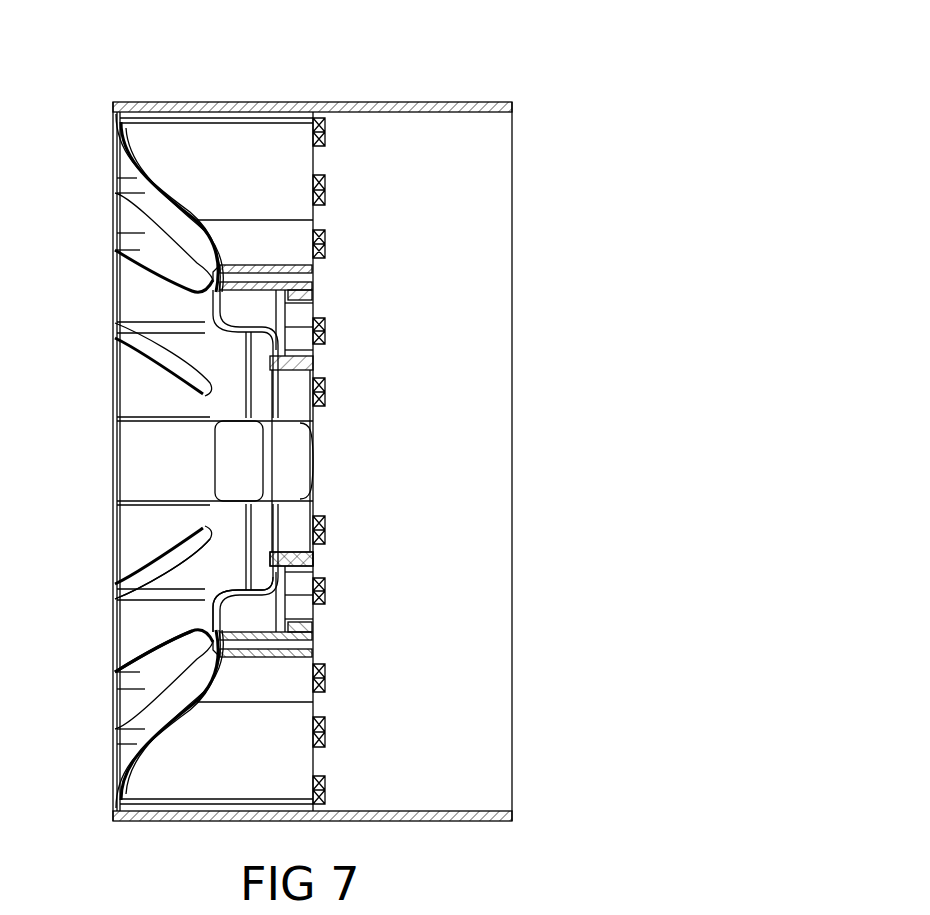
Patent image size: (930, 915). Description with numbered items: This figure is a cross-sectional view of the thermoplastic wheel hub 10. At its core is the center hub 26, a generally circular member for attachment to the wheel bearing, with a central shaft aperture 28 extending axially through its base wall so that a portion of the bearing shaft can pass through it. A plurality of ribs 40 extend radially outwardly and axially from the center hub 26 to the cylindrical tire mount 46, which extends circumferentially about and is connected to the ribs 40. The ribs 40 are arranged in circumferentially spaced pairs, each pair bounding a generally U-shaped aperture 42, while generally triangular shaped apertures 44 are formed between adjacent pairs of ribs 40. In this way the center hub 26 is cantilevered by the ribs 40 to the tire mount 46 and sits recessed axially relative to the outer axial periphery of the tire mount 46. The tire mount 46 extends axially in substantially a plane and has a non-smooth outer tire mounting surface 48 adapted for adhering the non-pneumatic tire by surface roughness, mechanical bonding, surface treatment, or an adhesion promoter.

The thermoplastic wheel hub 10 is at (538, 82).
The center hub 26 is at (258, 605).
The central shaft aperture 28 is at (295, 545).
The ribs 40 is at (135, 340).
The U-shaped aperture 42 is at (147, 620).
The triangular shaped apertures 44 is at (135, 565).
The tire mount 46 is at (378, 105).
The non-smooth outer tire mounting surface 48 is at (455, 822).